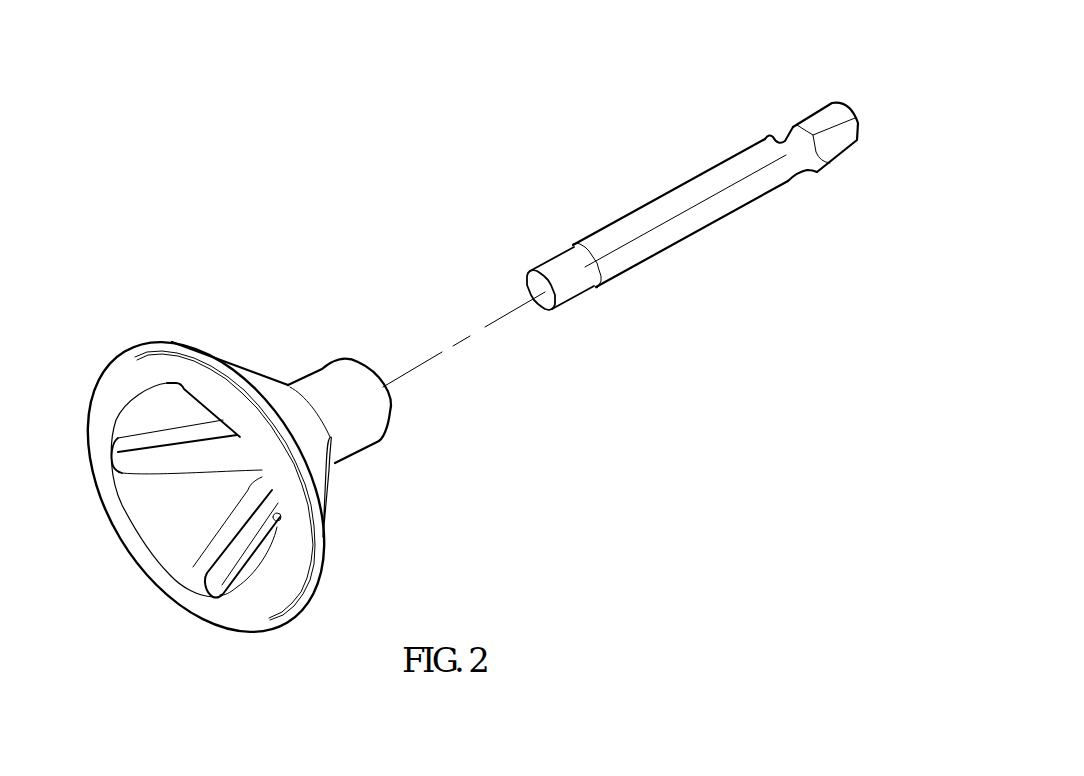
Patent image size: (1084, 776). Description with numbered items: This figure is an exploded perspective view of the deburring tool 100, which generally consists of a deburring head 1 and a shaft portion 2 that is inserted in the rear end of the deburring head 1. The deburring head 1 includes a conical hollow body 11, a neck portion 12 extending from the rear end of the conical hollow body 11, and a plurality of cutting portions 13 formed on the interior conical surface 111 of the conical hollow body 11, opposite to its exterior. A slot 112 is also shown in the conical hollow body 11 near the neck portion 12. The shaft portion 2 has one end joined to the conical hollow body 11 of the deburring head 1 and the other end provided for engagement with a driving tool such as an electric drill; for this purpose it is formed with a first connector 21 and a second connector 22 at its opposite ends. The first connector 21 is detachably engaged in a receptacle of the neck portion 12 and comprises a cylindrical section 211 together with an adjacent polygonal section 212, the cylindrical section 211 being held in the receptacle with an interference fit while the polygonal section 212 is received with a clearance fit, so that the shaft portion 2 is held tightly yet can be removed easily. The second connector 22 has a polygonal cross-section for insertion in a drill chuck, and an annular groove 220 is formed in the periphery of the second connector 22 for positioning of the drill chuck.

The deburring tool 100 is at (382, 159).
The deburring head 1 is at (345, 280).
The conical hollow body 11 is at (265, 388).
The neck portion 12 is at (320, 375).
The cutting portions 13 is at (141, 452).
The interior conical surface 111 is at (162, 537).
The through slot 112 is at (328, 476).
The shaft portion 2 is at (645, 189).
The first connector 21 is at (635, 394).
The cylindrical section 211 is at (573, 287).
The polygonal section 212 is at (623, 283).
The second connector 22 is at (813, 124).
The annular groove 220 is at (774, 127).